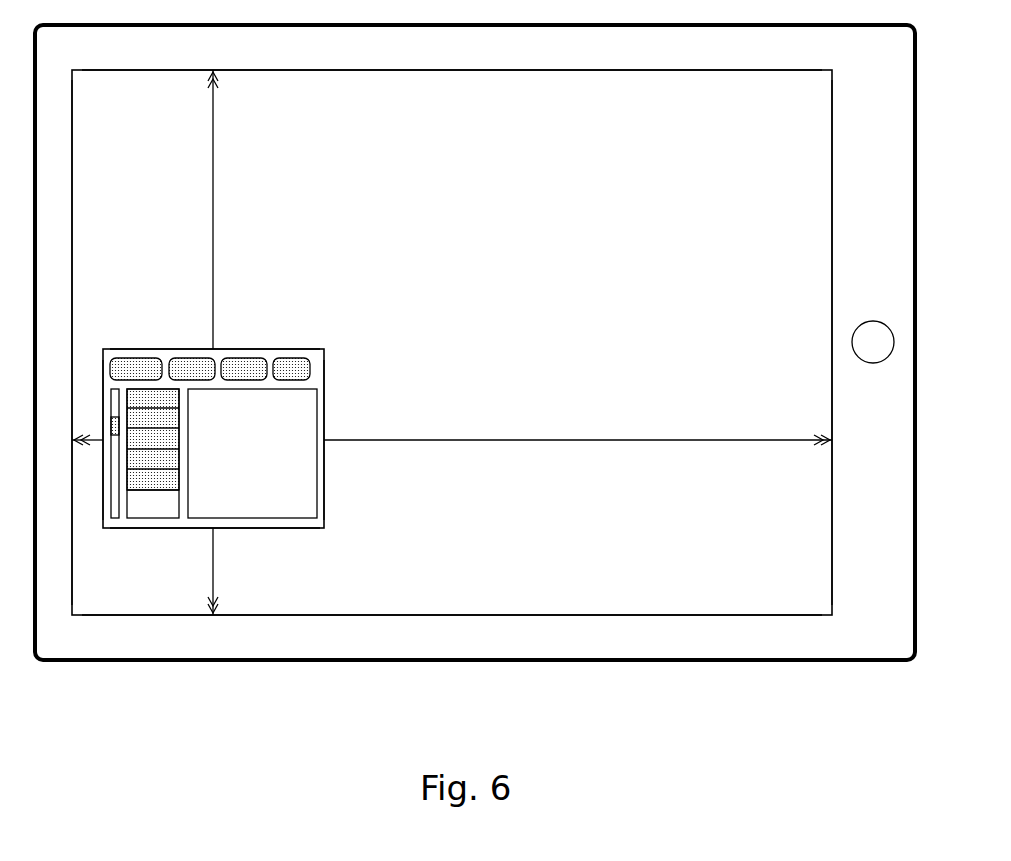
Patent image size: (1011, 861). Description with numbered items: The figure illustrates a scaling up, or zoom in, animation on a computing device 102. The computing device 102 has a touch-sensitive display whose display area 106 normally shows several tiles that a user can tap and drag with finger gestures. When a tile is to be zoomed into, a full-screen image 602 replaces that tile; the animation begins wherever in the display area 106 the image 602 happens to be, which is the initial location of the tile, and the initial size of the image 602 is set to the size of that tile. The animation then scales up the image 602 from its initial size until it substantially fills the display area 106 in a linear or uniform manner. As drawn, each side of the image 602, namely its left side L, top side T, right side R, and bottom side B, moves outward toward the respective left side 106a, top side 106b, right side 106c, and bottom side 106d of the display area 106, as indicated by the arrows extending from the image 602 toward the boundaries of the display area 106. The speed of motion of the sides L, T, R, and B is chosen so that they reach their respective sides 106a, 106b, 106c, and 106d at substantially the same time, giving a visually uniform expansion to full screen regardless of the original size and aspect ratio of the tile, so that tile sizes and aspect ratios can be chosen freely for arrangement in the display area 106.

The computing device 102 is at (915, 52).
The display area 106 is at (832, 132).
The left side of display area 106a is at (158, 197).
The top side of display area 106b is at (476, 70).
The right side of display area 106c is at (832, 281).
The bottom side of display area 106d is at (529, 614).
The full-screen image 602 is at (342, 344).
The left side of image L is at (102, 375).
The top side of image T is at (258, 349).
The right side of image R is at (324, 471).
The bottom side of image B is at (185, 528).